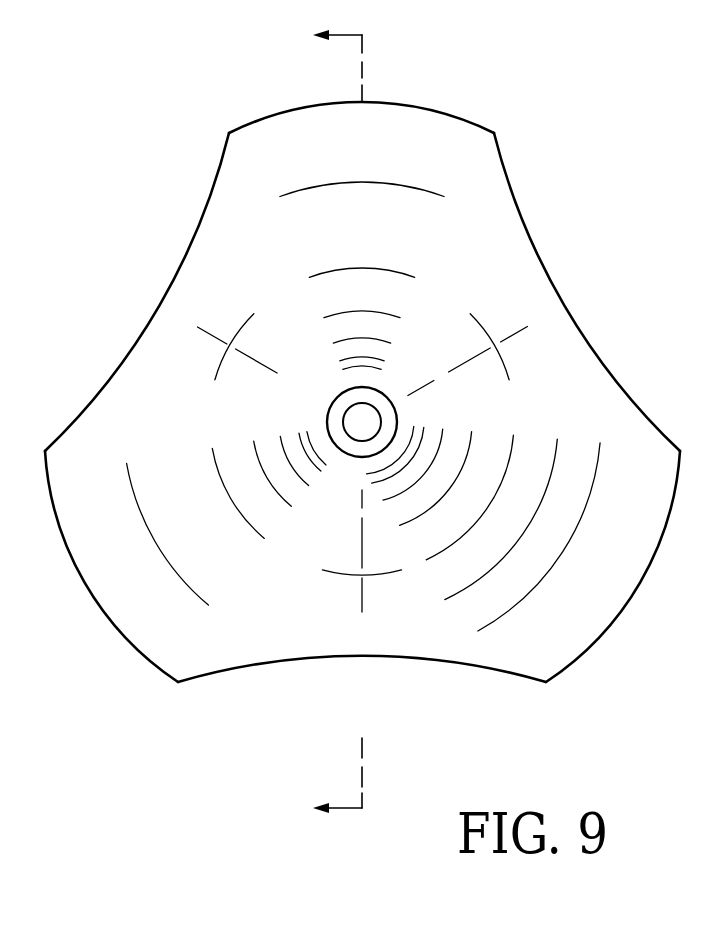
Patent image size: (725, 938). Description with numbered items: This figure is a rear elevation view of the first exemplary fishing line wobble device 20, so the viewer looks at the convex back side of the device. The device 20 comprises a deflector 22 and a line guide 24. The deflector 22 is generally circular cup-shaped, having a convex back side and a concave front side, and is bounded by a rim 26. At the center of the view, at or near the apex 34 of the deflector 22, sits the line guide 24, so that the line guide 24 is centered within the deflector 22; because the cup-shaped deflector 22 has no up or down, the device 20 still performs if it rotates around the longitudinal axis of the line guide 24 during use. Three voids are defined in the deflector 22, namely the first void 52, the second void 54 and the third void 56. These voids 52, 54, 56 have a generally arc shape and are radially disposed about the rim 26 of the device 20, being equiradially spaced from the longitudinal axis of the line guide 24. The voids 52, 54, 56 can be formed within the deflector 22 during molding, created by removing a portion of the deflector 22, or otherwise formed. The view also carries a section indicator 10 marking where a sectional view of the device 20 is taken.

The section line 10 is at (357, 422).
The fishing line wobble device 20 is at (370, 422).
The deflector 22 is at (582, 617).
The line guide 24 is at (398, 411).
The rim 26 is at (450, 113).
The apex 34 is at (407, 373).
The first void 52 is at (608, 316).
The second void 54 is at (330, 685).
The third void 56 is at (105, 331).